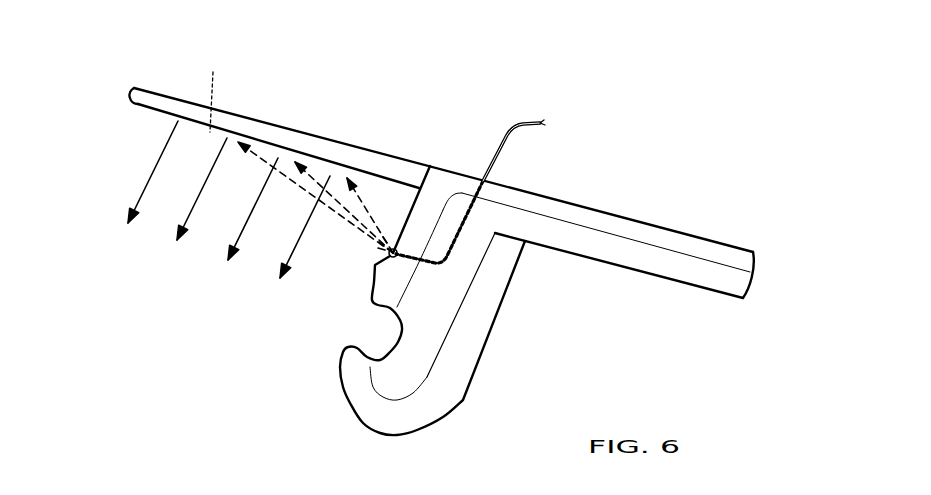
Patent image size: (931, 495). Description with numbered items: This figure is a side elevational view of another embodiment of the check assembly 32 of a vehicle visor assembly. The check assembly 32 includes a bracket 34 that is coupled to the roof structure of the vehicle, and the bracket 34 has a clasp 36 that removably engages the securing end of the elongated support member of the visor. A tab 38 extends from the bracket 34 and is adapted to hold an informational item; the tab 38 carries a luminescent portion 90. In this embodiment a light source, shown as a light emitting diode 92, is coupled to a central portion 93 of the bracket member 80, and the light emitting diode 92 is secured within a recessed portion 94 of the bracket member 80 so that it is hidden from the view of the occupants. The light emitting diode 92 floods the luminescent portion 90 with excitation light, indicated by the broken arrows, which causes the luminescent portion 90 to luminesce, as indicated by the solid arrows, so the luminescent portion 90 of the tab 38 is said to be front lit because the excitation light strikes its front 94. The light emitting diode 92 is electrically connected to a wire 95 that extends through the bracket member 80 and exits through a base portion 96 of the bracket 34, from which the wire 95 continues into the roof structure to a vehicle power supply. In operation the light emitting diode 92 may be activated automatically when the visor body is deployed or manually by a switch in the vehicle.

The check assembly 32 is at (702, 119).
The bracket 34 is at (673, 258).
The clasp 36 is at (377, 332).
The tab 38 is at (268, 130).
The bracket member 80 is at (468, 258).
The luminescent portion 90 is at (213, 92).
The light emitting diode (LED) 92 is at (386, 258).
The central portion 93 is at (454, 294).
The recessed portion 94 is at (143, 103).
The wire 95 is at (521, 125).
The base portion 96 is at (583, 205).